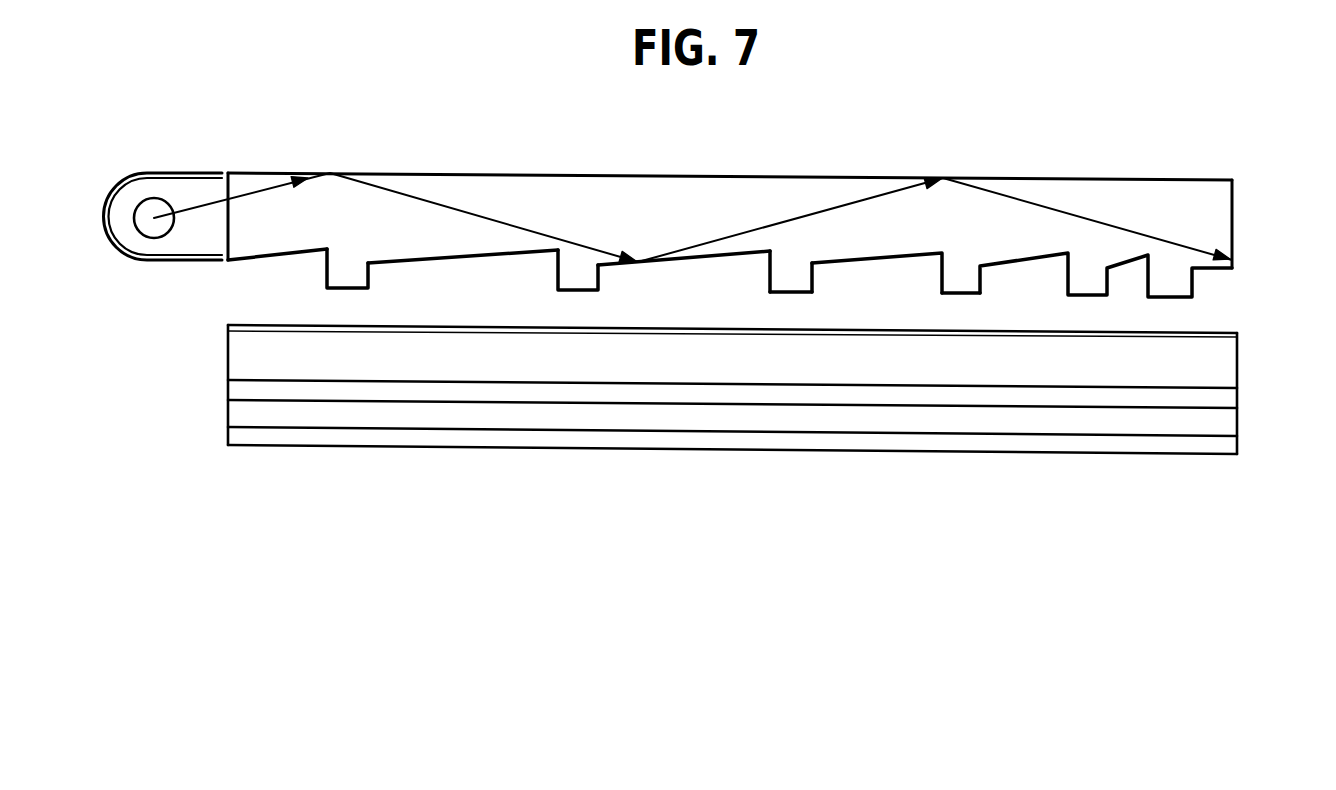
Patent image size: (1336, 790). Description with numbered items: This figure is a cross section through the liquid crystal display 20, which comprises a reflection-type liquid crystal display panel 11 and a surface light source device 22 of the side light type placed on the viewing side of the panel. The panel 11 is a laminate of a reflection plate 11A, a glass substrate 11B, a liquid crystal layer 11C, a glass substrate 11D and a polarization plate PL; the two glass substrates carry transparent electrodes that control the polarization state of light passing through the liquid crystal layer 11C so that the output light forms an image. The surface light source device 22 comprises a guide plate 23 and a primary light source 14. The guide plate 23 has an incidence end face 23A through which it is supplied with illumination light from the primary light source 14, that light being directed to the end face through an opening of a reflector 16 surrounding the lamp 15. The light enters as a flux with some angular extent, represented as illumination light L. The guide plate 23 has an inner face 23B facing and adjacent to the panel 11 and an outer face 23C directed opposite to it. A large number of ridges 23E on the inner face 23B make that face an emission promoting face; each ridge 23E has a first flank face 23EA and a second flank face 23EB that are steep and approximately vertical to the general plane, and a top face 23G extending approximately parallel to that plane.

The primary light source 14 is at (183, 148).
The reflector 16 is at (113, 248).
The light source lamp 15 is at (148, 230).
The surface light source device 22 is at (862, 155).
The guide plate 23 is at (650, 174).
The incidence end face 23A is at (230, 237).
The inner face 23B is at (435, 260).
The outer face 23C is at (437, 173).
The ridge 23E is at (582, 268).
The first flank face 23EA is at (767, 275).
The second flank face 23EB is at (805, 283).
The top face 23G is at (955, 295).
The illumination light L is at (1093, 218).
The liquid crystal display 20 is at (327, 577).
The liquid crystal display panel 11 is at (670, 503).
The polarization plate PL is at (1237, 328).
The glass substrate 11D is at (1223, 366).
The liquid crystal layer 11C is at (1223, 400).
The glass substrate 11B is at (1223, 430).
The reflection plate 11A is at (1227, 447).